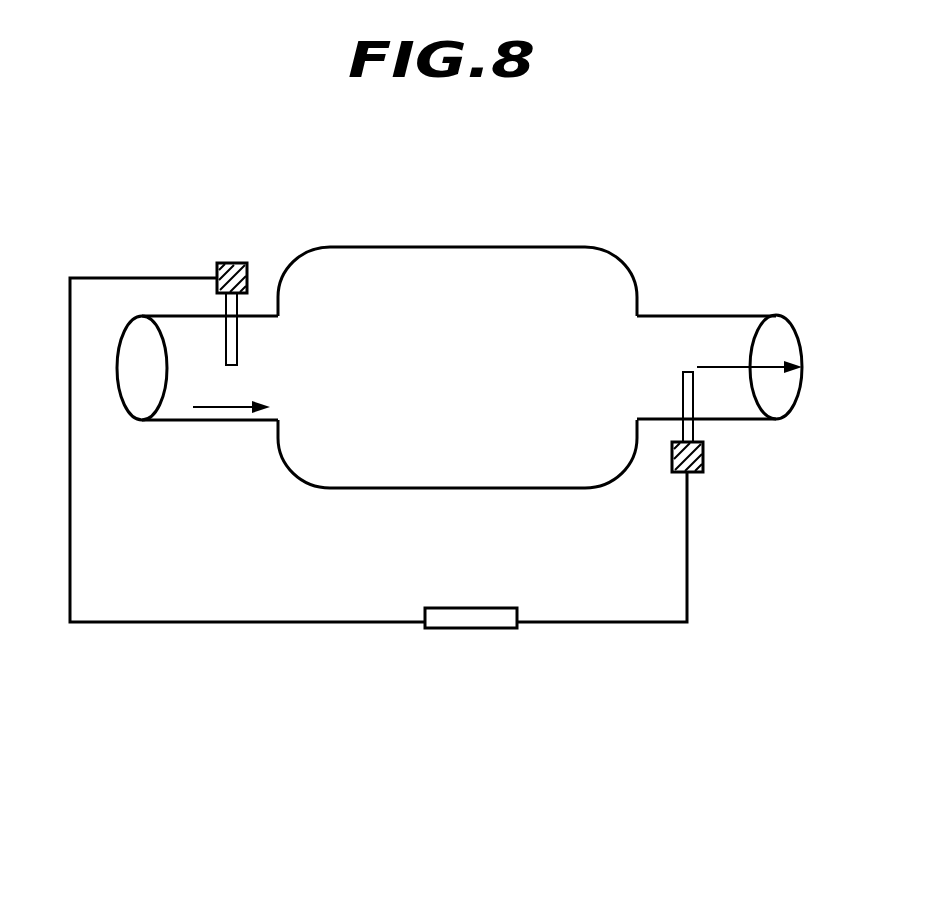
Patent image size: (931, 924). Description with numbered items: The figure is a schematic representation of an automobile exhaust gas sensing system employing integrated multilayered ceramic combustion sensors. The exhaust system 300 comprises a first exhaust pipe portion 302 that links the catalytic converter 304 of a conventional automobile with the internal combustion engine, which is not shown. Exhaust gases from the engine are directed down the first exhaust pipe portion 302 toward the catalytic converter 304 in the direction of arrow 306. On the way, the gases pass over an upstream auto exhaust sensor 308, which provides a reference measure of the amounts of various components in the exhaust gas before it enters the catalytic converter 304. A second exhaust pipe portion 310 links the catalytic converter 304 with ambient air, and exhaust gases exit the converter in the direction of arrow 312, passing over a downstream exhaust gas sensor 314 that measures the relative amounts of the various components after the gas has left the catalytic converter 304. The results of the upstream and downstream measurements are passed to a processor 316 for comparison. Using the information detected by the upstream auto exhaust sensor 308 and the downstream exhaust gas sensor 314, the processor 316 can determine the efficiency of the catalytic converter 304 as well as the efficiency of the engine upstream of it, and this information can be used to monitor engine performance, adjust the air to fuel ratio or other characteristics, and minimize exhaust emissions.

The exhaust system 300 is at (684, 202).
The first exhaust pipe portion 302 is at (208, 422).
The catalytic converter 304 is at (568, 245).
The arrow 306 is at (243, 399).
The upstream auto exhaust sensor 308 is at (215, 262).
The second exhaust pipe portion 310 is at (737, 310).
The arrow 312 is at (749, 356).
The downstream exhaust gas sensor 314 is at (690, 473).
The processor 316 is at (472, 620).